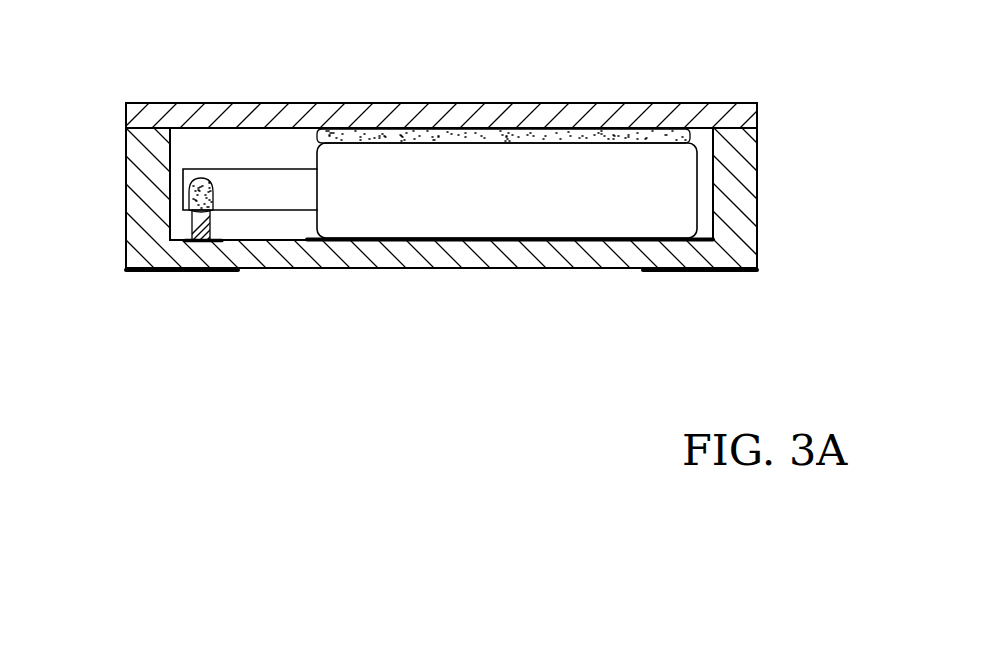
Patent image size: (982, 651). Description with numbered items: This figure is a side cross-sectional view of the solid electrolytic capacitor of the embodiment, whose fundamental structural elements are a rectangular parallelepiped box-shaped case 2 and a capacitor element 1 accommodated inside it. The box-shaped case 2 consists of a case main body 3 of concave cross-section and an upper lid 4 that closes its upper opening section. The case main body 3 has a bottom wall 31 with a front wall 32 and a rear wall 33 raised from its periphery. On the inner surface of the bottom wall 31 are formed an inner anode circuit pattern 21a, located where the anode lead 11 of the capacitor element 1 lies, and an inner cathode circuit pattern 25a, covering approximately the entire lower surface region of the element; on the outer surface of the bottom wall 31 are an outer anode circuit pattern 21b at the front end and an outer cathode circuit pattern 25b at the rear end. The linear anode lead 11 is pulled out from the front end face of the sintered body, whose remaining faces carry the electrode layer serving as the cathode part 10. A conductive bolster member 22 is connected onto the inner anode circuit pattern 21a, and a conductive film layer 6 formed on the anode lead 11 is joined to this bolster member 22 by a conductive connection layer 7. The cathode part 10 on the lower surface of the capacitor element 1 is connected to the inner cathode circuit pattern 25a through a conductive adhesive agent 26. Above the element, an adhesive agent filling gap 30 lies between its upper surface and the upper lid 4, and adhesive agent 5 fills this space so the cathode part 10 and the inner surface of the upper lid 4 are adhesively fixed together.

The capacitor element 1 is at (443, 194).
The box-shaped case 2 is at (443, 210).
The case main body 3 is at (769, 169).
The upper lid 4 is at (768, 105).
The adhesive agent 5 is at (527, 135).
The conductive film layer 6 is at (198, 178).
The conductive connection layer 7 is at (190, 206).
The cathode part 10 is at (617, 218).
The anode lead 11 is at (270, 190).
The inner anode circuit pattern 21a is at (185, 242).
The outer anode circuit pattern 21b is at (148, 272).
The conductive bolster member 22 is at (207, 223).
The inner cathode circuit pattern 25a is at (563, 240).
The outer cathode circuit pattern 25b is at (697, 272).
The conductive adhesive agent 26 is at (446, 243).
The adhesive agent filling gap 30 is at (425, 135).
The bottom wall 31 is at (378, 257).
The front wall 32 is at (145, 183).
The rear wall 33 is at (737, 210).